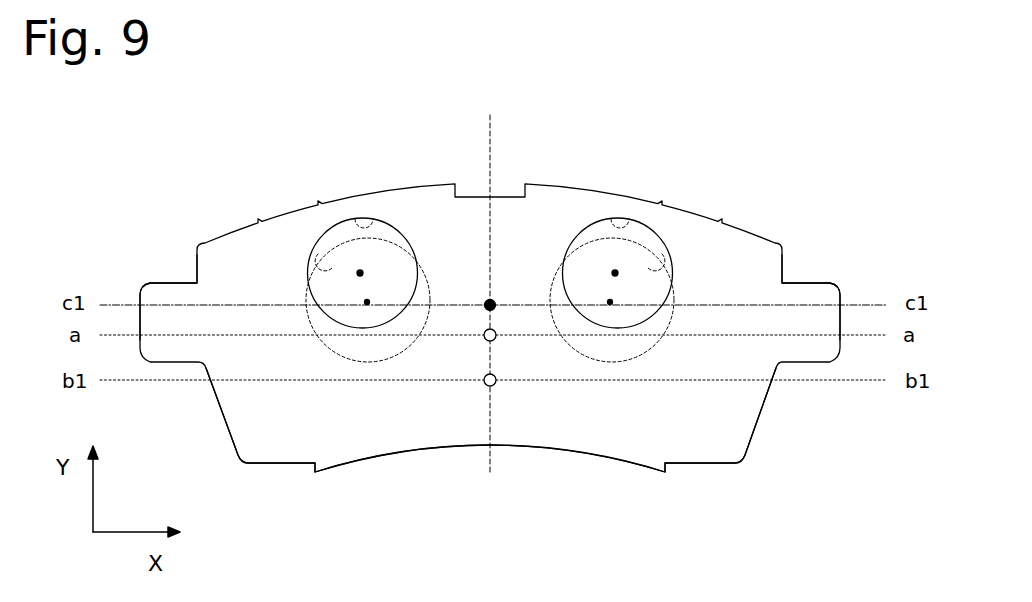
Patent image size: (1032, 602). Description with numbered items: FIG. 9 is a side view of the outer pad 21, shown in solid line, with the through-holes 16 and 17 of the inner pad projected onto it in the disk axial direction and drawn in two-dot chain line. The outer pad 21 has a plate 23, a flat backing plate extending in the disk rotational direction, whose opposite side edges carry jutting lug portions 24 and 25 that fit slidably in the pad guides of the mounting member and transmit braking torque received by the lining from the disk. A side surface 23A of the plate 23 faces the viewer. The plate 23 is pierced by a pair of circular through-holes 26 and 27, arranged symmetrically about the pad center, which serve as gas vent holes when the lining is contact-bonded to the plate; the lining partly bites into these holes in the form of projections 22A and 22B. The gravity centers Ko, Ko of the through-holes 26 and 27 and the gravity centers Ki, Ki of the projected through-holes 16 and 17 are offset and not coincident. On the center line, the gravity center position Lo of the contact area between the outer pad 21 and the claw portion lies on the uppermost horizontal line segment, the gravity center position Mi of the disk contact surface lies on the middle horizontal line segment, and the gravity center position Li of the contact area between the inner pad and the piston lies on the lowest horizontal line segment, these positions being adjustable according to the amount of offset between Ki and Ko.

The through-hole 16 is at (338, 248).
The through-hole 17 is at (653, 255).
The outer pad 21 is at (752, 215).
The projection 22A is at (313, 240).
The projection 22B is at (597, 230).
The plate 23 is at (288, 428).
The side surface 23A is at (658, 422).
The lug portion 24 is at (810, 300).
The lug portion 25 is at (163, 300).
The through-hole 26 is at (366, 226).
The through-hole 27 is at (620, 226).
The gravity center of through-hole Ko is at (360, 273).
The gravity center of through-hole Ki is at (367, 302).
The gravity center position of contact area Lo is at (492, 302).
The gravity center position of disk contact surface Mi is at (484, 337).
The gravity center position of contact area Li is at (494, 385).